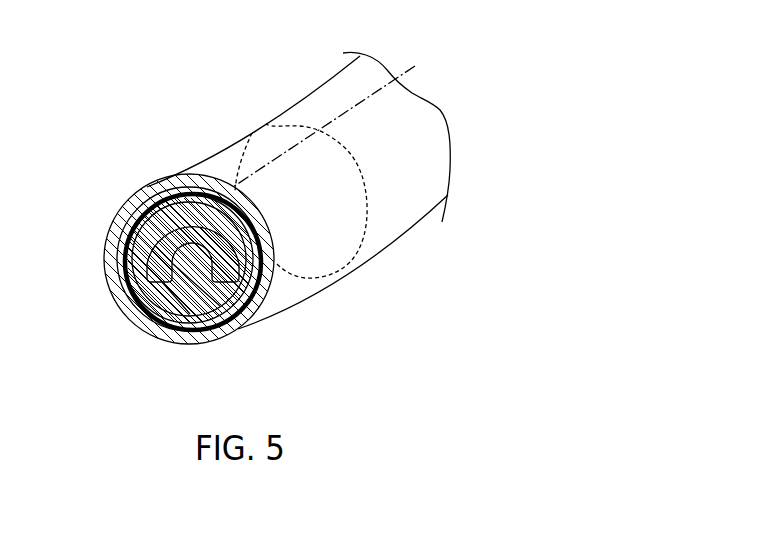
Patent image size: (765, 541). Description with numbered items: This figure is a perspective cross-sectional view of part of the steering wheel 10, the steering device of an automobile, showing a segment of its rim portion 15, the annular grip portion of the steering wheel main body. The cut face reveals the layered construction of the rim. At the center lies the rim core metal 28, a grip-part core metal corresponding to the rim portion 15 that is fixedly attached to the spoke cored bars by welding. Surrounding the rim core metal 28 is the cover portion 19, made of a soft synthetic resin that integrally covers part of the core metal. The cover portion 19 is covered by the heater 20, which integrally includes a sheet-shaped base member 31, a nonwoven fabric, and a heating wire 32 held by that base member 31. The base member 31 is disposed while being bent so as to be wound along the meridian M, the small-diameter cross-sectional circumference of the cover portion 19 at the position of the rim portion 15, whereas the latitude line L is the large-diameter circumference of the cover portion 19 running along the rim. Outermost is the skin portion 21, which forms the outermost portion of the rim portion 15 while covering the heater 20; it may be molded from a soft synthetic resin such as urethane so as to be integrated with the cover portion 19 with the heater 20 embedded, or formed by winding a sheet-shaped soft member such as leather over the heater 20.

The steering wheel 10 is at (298, 169).
The rim portion 15 is at (405, 222).
The cover portion 19 is at (190, 315).
The heater 20 is at (243, 318).
The skin portion 21 is at (145, 192).
The rim core metal 28 is at (137, 258).
The base member 31 is at (112, 237).
The heating wire 32 is at (215, 338).
The latitude line L is at (332, 120).
The meridian M is at (366, 245).